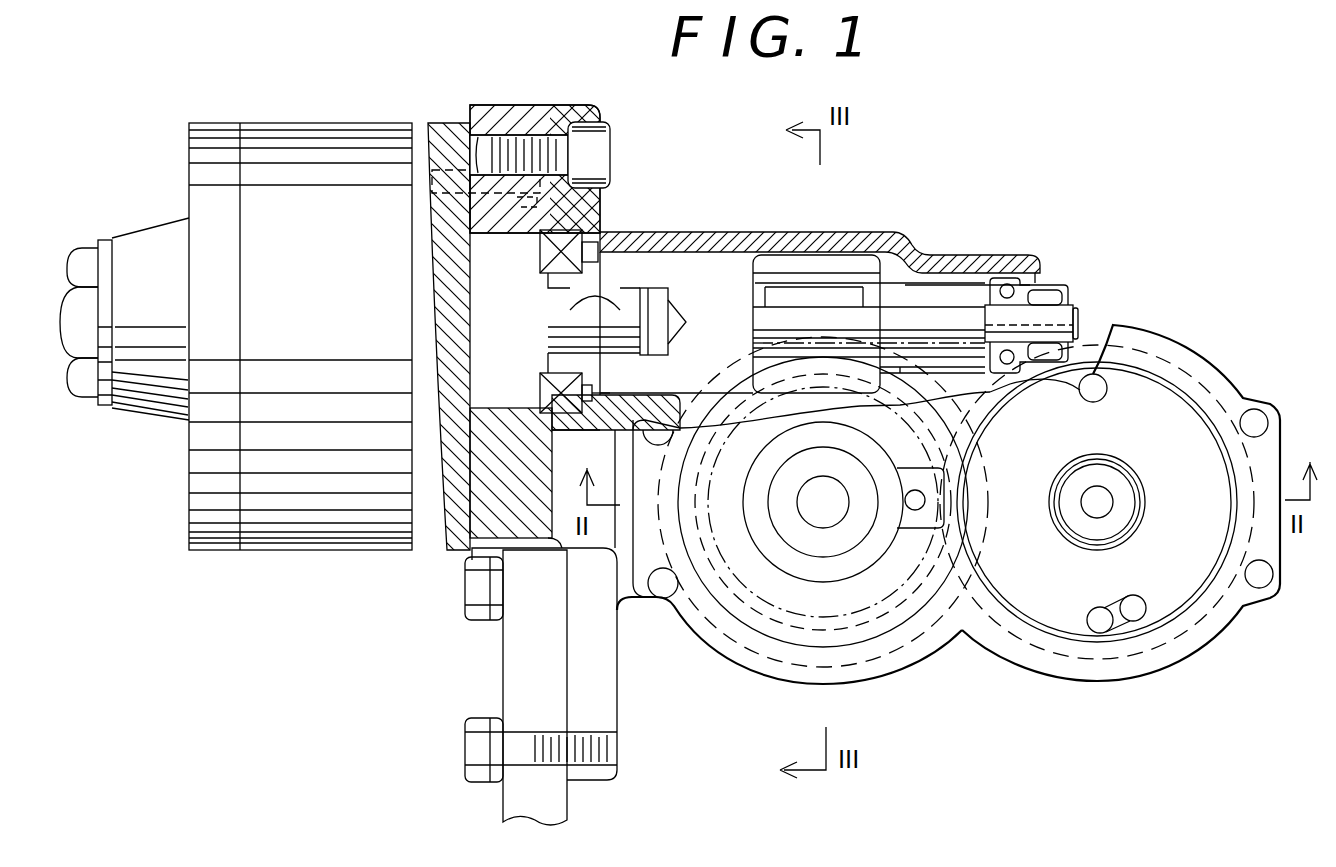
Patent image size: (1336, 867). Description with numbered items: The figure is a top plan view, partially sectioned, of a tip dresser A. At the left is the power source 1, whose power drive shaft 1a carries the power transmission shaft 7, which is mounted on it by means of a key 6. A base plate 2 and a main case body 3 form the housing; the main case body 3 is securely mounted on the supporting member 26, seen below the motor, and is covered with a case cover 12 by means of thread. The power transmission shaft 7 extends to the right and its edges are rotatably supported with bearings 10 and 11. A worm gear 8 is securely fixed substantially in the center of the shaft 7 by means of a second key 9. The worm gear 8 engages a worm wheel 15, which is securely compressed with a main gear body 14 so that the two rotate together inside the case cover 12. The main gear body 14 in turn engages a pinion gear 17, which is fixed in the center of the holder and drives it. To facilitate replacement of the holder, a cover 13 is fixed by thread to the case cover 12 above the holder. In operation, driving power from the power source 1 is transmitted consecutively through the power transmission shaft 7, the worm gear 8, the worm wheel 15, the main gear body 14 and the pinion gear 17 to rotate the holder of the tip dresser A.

The tip dresser A is at (1077, 165).
The power source 1 is at (333, 160).
The power drive shaft 1a is at (628, 312).
The base plate 2 is at (513, 105).
The main case body 3 is at (577, 105).
The key 6 is at (598, 300).
The power transmission shaft 7 is at (722, 285).
The worm gear 8 is at (878, 268).
The key 9 is at (823, 290).
The bearing 10 is at (545, 262).
The bearing 11 is at (1010, 250).
The case cover 12 is at (893, 655).
The cover 13 is at (1043, 617).
The main gear body 14 is at (768, 630).
The worm wheel 15 is at (745, 620).
The pinion gear 17 is at (1153, 650).
The supporting member 26 is at (522, 645).